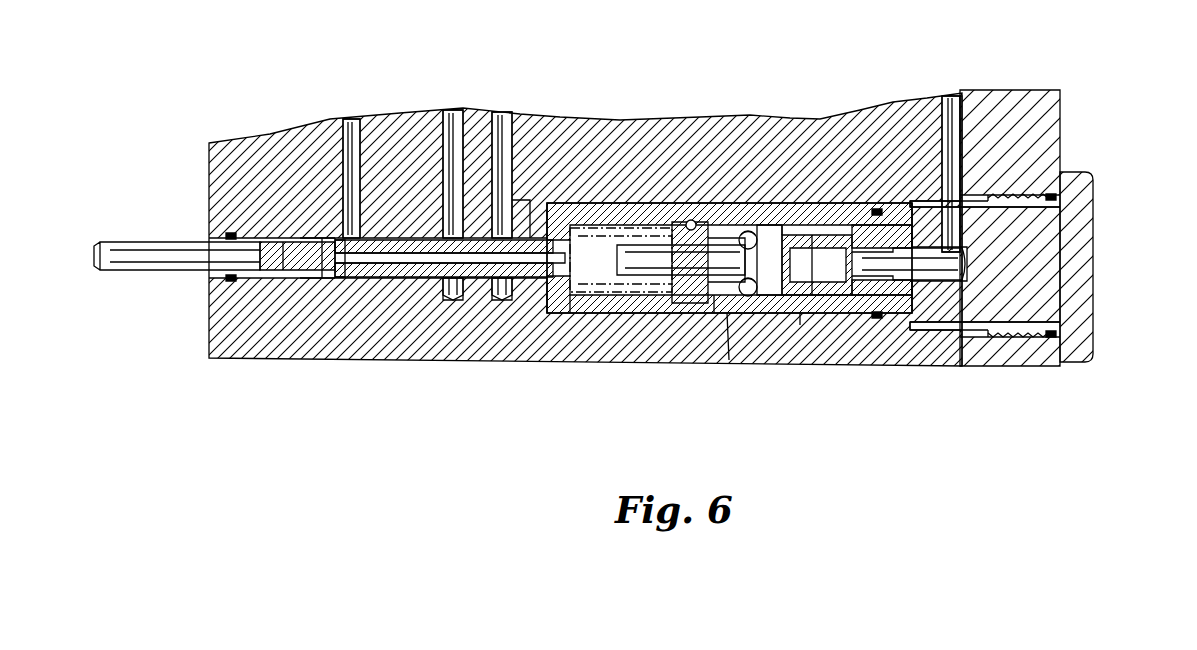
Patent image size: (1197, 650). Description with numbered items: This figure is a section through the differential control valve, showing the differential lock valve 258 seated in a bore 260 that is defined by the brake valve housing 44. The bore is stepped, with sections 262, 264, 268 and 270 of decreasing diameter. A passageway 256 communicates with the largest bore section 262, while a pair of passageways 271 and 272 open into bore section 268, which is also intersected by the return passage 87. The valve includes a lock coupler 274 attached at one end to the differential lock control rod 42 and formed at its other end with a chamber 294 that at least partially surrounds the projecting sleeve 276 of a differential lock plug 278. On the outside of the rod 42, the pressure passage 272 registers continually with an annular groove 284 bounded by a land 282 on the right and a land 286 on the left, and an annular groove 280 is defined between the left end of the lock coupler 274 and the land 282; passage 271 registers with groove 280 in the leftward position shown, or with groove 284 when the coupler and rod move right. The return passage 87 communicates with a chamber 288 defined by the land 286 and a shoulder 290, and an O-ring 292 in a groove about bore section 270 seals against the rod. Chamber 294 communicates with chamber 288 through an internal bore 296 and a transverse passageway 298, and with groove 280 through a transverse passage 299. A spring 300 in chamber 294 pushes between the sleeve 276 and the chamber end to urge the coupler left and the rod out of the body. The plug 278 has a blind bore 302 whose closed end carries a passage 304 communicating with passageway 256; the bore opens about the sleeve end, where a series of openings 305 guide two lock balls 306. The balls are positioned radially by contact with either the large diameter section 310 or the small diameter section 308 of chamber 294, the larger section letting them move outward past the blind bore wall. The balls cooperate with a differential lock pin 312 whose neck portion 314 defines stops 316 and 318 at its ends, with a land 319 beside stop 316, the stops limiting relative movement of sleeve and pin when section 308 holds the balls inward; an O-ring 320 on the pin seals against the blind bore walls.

The differential lock control rod 42 is at (140, 272).
The brake valve housing 44 is at (455, 340).
The return passage 87 is at (352, 120).
The passageway 256 is at (950, 100).
The differential lock valve 258 is at (729, 360).
The bore 260 is at (830, 345).
The bore section 262 is at (975, 350).
The bore section 264 is at (691, 222).
The bore section 268 is at (320, 358).
The bore section 270 is at (290, 272).
The passageway 271 is at (500, 120).
The passageway 272 is at (447, 118).
The lock coupler 274 is at (600, 320).
The projecting sleeve 276 is at (870, 190).
The differential lock plug 278 is at (1093, 215).
The annular groove 280 is at (548, 230).
The land 282 is at (505, 295).
The annular groove 284 is at (410, 255).
The land 286 is at (373, 238).
The chamber 288 is at (338, 272).
The shoulder 290 is at (322, 250).
The O-ring 292 is at (230, 277).
The chamber 294 is at (660, 300).
The internal bore 296 is at (448, 290).
The transverse passageway 298 is at (298, 383).
The transverse passage 299 is at (490, 237).
The spring 300 is at (580, 313).
The blind bore 302 is at (955, 268).
The passage 304 is at (960, 225).
The openings 305 is at (790, 215).
The lock balls 306 is at (750, 231).
The small diameter section 308 is at (790, 300).
The large diameter section 310 is at (670, 228).
The differential lock pin 312 is at (655, 270).
The neck portion 314 is at (800, 240).
The stop 316 is at (742, 300).
The stop 318 is at (830, 205).
The land 319 is at (715, 320).
The O-ring 320 is at (840, 320).